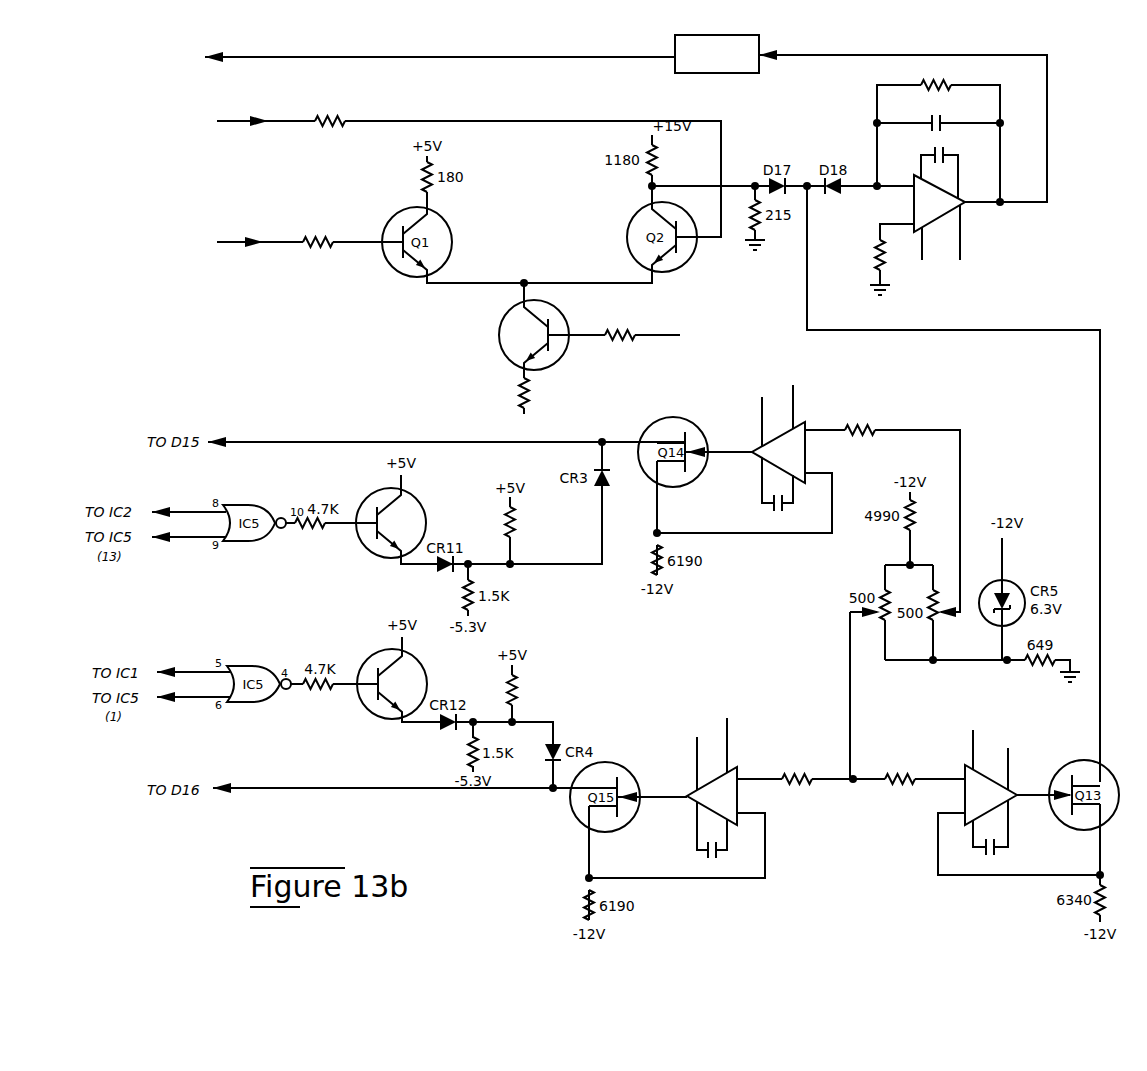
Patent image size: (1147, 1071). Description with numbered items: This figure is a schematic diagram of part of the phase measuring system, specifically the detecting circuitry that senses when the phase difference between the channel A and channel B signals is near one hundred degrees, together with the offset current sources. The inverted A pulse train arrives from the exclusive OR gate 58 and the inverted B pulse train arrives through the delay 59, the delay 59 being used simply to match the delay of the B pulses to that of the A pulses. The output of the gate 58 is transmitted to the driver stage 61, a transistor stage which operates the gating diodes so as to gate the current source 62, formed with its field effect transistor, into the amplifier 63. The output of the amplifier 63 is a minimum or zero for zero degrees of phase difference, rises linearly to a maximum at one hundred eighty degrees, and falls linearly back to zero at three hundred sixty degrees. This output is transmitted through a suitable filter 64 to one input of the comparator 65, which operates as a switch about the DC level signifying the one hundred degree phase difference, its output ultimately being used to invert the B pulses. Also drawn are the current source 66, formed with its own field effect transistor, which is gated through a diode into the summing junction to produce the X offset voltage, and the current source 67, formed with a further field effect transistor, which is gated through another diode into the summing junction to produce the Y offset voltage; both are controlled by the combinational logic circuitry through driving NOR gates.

The exclusive OR gate 58 is at (421, 166).
The delay 59 is at (252, 233).
The driver stage 61 is at (541, 265).
The current source 62 is at (957, 782).
The amplifier 63 is at (912, 194).
The filter 64 is at (759, 41).
The comparator 65 is at (426, 59).
The current source 66 is at (808, 453).
The current source 67 is at (740, 797).